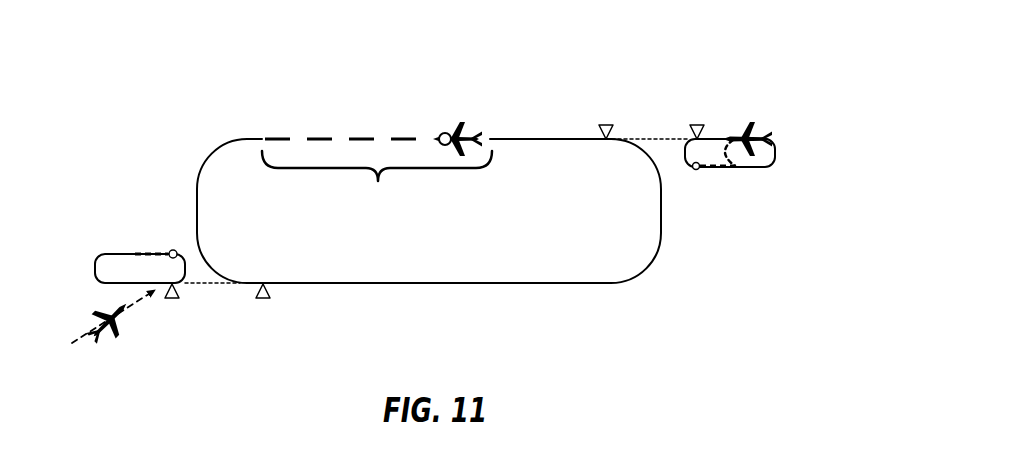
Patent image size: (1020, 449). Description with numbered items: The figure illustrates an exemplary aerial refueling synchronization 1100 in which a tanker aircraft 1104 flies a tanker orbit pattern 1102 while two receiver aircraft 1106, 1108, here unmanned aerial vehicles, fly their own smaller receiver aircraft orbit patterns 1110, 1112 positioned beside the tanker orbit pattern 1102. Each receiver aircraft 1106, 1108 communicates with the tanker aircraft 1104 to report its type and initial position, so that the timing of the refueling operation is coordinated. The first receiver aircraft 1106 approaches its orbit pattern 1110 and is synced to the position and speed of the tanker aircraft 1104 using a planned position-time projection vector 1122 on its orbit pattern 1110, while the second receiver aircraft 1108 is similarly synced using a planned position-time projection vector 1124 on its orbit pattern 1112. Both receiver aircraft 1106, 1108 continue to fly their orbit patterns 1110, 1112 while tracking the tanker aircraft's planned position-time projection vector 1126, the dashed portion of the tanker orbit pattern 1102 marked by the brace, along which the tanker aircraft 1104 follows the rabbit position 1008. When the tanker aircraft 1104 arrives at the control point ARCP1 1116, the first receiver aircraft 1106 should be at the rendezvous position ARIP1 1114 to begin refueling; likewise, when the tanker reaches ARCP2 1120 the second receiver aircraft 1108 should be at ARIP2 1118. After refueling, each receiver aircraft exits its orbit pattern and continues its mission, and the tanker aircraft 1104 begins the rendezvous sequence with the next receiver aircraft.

The airport traffic management system 1100 is at (225, 39).
The tanker orbit pattern 1102 is at (662, 233).
The tanker aircraft 1104 is at (450, 127).
The rabbit position 1008 is at (443, 133).
The receiver aircraft 1106 is at (107, 330).
The receiver aircraft 1108 is at (750, 133).
The receiver aircraft orbit pattern 1110 is at (95, 263).
The receiver aircraft orbit pattern 1112 is at (775, 155).
The ARIP1 1114 is at (178, 293).
The ARCP1 1116 is at (270, 294).
The ARIP2 1118 is at (697, 124).
The ARCP2 1120 is at (606, 124).
The planned position-time projection vector 1122 is at (154, 250).
The planned position-time projection vector 1124 is at (722, 175).
The planned position-time projection vector 1126 is at (377, 175).